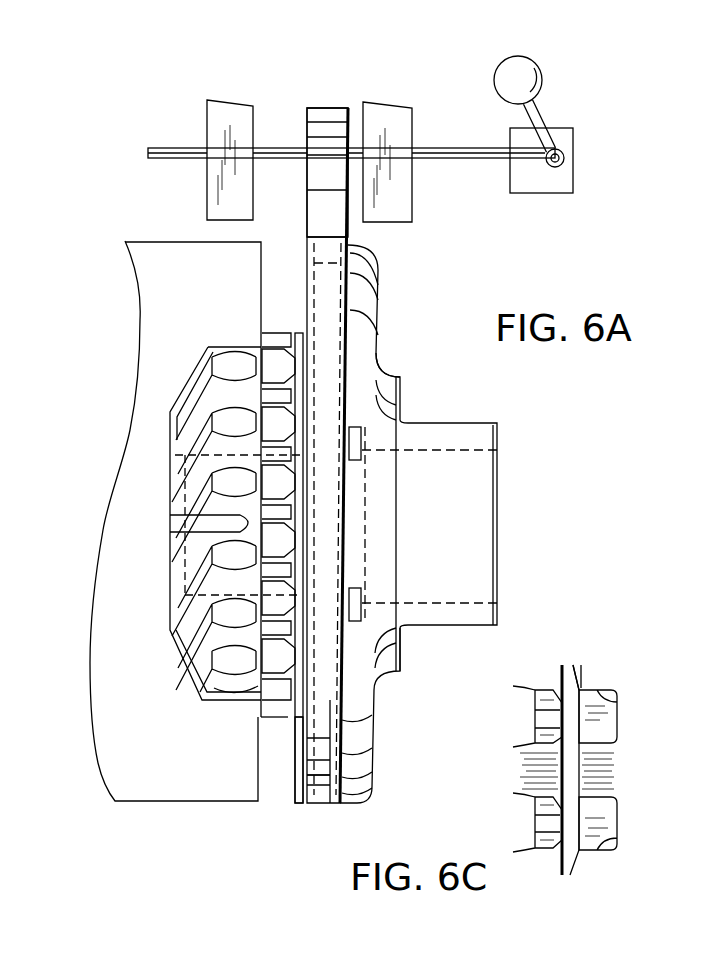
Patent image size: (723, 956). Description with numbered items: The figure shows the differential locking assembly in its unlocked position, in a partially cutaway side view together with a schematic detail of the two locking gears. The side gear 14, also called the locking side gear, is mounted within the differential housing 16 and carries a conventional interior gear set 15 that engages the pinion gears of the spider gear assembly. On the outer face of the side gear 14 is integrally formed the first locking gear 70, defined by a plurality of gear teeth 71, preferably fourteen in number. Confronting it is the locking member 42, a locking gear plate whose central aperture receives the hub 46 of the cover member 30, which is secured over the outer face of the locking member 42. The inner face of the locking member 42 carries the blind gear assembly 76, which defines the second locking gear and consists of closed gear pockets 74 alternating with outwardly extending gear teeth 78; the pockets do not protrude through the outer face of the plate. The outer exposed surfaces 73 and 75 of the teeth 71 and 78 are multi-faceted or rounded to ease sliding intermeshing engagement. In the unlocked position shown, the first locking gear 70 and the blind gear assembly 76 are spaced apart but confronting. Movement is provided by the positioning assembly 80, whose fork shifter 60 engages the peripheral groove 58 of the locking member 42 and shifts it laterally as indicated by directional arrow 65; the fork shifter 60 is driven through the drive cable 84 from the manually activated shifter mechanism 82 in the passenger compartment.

In FIG. 6A, the side gear 14 is at (232, 333).
In FIG. 6A, the gear set 15 is at (180, 674).
In FIG. 6A, the differential housing 16 is at (153, 816).
In FIG. 6A, the cover member 30 is at (433, 312).
In FIG. 6A, the locking member 42 is at (300, 814).
In FIG. 6A, the hub 46 is at (435, 622).
In FIG. 6A, the peripheral groove 58 is at (318, 777).
In FIG. 6A, the fork shifter 60 is at (330, 335).
In FIG. 6A, the directional arrow 65 is at (298, 128).
In FIG. 6A, the first locking gear 70 is at (276, 742).
In FIG. 6C, the first locking gear 70 is at (550, 670).
In FIG. 6A, the gear teeth 71 is at (283, 333).
In FIG. 6C, the gear teeth 71 is at (528, 686).
In FIG. 6C, the outer exposed surface 73 is at (535, 718).
In FIG. 6C, the closed gear pockets 74 is at (617, 698).
In FIG. 6C, the outer exposed surface 75 is at (560, 780).
In FIG. 6C, the blind gear assembly 76 is at (598, 652).
In FIG. 6C, the gear teeth 78 is at (600, 775).
In FIG. 6A, the positioning assembly 80 is at (432, 94).
In FIG. 6A, the shifter mechanism 82 is at (532, 117).
In FIG. 6A, the drive cable 84 is at (457, 162).